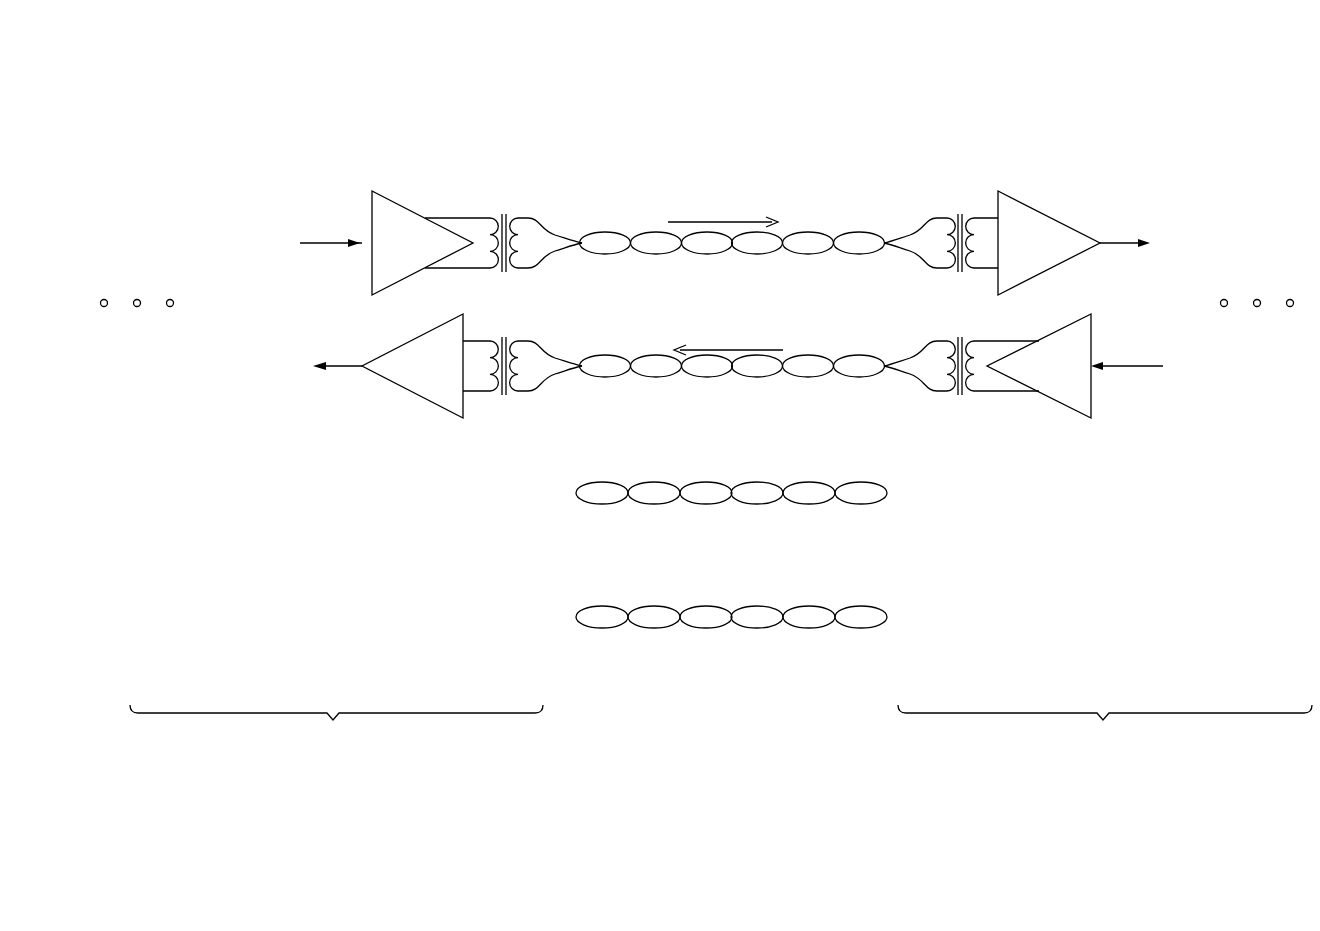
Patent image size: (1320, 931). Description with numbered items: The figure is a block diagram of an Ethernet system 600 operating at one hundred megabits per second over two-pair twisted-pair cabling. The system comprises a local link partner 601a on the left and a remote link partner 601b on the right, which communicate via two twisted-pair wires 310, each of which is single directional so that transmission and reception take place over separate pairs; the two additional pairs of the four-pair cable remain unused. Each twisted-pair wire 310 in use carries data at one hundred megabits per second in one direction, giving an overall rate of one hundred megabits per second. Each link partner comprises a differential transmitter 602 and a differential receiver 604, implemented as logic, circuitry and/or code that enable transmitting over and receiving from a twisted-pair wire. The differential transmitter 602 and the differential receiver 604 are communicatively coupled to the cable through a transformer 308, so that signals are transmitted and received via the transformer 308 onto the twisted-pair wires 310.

The Ethernet system 600 is at (430, 84).
The differential transmitter 602 is at (372, 204).
The differential receiver 604 is at (1030, 212).
The transformer 308 is at (942, 202).
The twisted-pair wires 310 is at (627, 224).
The local link partner 601a is at (481, 713).
The remote link partner 601b is at (1065, 716).